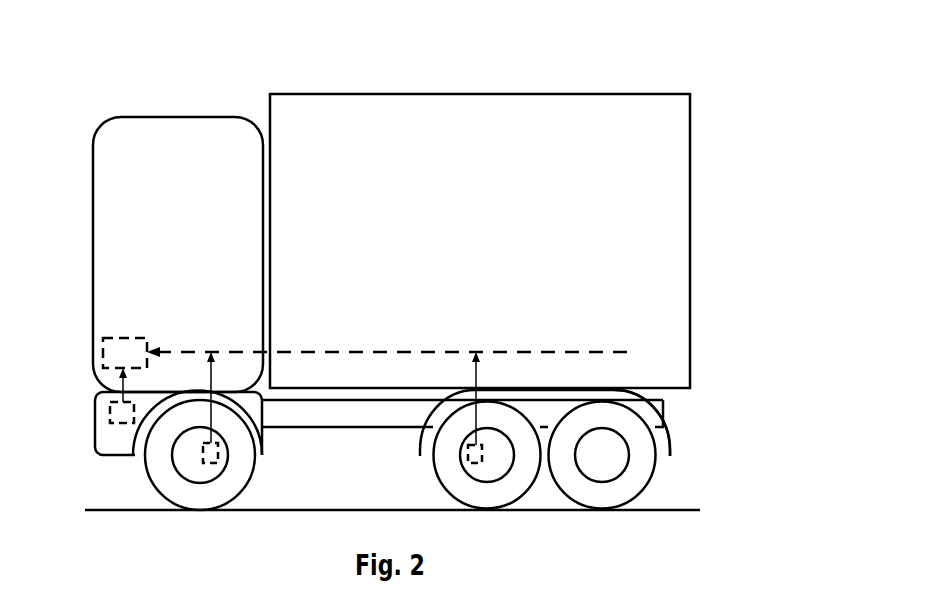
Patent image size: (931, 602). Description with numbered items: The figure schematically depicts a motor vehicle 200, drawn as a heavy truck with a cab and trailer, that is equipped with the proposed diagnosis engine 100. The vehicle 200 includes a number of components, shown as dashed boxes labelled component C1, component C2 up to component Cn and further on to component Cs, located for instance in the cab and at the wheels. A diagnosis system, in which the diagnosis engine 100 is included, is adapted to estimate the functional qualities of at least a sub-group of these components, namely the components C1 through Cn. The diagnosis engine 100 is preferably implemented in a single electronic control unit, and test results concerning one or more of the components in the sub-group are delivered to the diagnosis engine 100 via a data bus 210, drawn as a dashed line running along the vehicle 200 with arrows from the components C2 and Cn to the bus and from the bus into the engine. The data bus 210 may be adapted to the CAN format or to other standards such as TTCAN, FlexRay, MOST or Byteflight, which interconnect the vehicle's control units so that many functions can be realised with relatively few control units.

The motor vehicle 200 is at (180, 88).
The diagnosis engine 100 is at (127, 338).
The data bus 210 is at (545, 352).
The component C1 is at (102, 410).
The component C2 is at (220, 457).
The component Cn is at (463, 455).
The component Cs is at (670, 440).